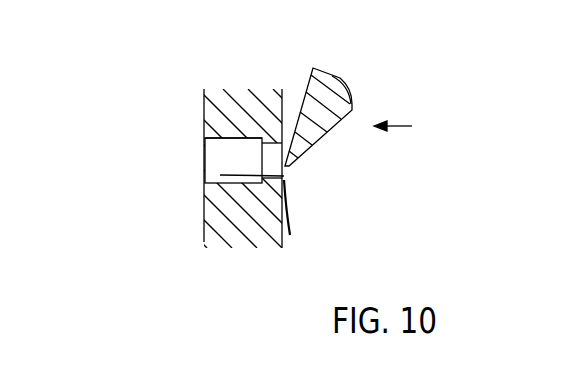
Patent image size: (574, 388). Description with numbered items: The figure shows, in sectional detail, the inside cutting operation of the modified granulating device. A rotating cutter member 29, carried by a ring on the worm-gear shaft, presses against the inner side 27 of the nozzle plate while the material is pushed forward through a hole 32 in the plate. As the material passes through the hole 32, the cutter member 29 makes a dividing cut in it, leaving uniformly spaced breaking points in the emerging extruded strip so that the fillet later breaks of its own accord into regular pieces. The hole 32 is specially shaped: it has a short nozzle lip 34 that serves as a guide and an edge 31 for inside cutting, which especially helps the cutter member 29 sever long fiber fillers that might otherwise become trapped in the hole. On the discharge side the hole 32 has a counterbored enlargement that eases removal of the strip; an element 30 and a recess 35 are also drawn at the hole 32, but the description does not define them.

The inner side of the nozzle plate 27 is at (210, 108).
The cutter member 29 is at (347, 85).
The strip 30 is at (290, 200).
The edge for inside cutting 31 is at (283, 178).
The hole in the nozzle plate 32 is at (233, 162).
The nozzle lip 34 is at (281, 150).
The recess 35 is at (205, 138).